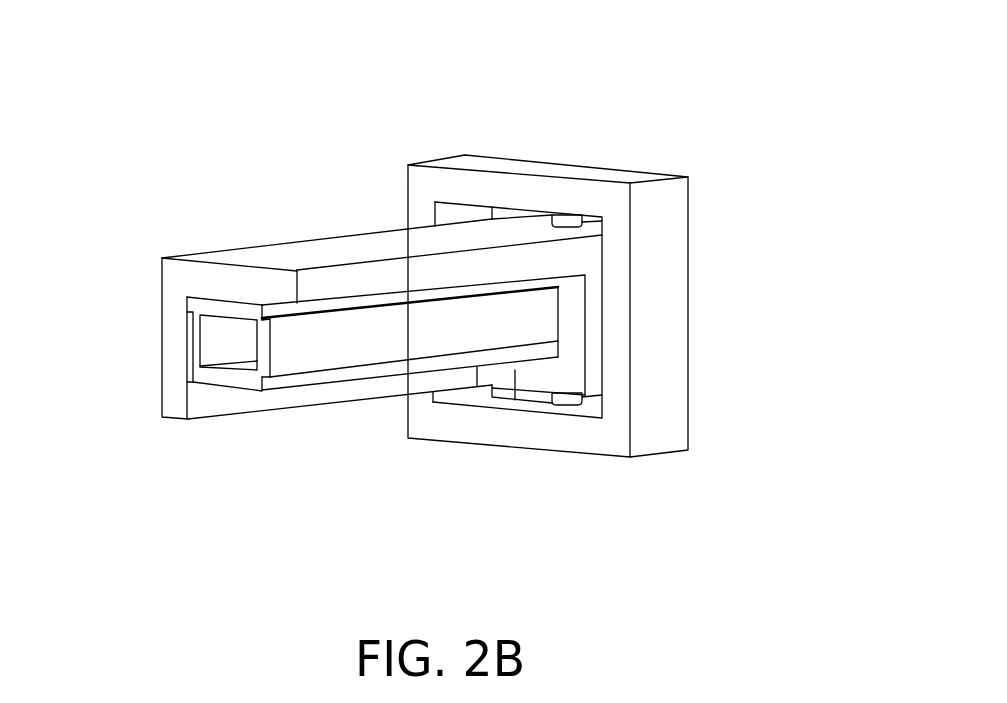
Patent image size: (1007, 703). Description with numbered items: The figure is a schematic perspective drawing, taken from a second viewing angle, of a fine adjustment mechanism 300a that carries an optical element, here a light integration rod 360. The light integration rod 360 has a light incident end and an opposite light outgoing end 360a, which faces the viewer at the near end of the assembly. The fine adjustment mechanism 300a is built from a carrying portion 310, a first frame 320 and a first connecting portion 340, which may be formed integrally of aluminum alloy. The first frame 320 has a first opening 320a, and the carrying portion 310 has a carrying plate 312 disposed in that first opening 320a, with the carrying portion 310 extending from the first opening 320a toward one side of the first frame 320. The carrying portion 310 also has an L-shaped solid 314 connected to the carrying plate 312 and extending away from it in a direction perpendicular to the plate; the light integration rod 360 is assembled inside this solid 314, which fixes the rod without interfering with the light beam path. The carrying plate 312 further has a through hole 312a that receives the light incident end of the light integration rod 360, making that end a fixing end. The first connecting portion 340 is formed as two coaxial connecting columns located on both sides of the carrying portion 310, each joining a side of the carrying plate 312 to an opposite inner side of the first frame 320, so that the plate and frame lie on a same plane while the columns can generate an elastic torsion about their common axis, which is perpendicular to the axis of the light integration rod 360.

The fine adjustment mechanism 300a is at (806, 597).
The carrying portion 310 is at (385, 591).
The carrying plate 312 is at (515, 372).
The through hole 312a is at (562, 327).
The solid 314 is at (233, 402).
The first frame 320 is at (612, 196).
The first opening 320a is at (504, 212).
The first connecting portion 340 is at (567, 220).
The light integration rod 360 is at (283, 332).
The light outgoing end 360a is at (223, 347).